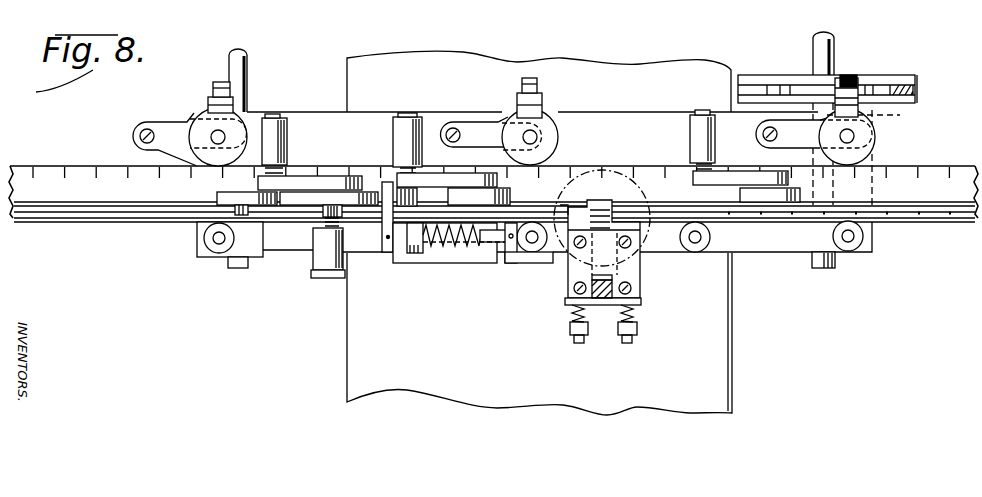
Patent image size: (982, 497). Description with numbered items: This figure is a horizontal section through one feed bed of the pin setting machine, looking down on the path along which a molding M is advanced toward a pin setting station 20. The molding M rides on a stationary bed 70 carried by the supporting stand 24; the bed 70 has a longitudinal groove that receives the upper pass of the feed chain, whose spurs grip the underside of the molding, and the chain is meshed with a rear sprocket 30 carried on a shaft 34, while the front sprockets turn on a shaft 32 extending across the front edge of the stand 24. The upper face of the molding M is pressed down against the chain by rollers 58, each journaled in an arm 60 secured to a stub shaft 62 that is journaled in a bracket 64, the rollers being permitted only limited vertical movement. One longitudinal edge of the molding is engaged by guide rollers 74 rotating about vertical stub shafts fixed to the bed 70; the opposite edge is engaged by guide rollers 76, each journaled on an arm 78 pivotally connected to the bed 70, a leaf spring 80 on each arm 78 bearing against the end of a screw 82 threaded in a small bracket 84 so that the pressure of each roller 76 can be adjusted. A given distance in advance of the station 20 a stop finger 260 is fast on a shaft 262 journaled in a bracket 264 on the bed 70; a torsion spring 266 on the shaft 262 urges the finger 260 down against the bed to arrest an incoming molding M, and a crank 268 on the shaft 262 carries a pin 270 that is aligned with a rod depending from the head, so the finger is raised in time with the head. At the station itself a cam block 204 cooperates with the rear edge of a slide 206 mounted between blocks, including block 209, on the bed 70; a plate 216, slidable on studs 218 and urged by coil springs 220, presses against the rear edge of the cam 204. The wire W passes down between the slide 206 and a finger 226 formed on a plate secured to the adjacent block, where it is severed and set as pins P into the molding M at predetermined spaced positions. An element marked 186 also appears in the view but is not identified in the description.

The pin setting station 20 is at (632, 199).
The stand 24 is at (734, 342).
The rear sprocket 30 is at (915, 84).
The shaft 32 is at (237, 268).
The shaft 34 is at (823, 270).
The roller 58 is at (367, 190).
The arm 60 is at (293, 185).
The stub shaft 62 is at (277, 118).
The bracket 64 is at (285, 135).
The stationary bed 70 is at (630, 122).
The guide roller 74 is at (208, 247).
The guide roller 76 is at (232, 122).
The arm 78 is at (163, 132).
The leaf spring 80 is at (200, 113).
The screw 82 is at (232, 93).
The bracket 84 is at (540, 93).
The member 186 is at (620, 198).
The cam block 204 is at (603, 300).
The slide 206 is at (562, 208).
The block 209 is at (633, 270).
The plate 216 is at (567, 307).
The stud 218 is at (578, 338).
The coil spring 220 is at (637, 317).
The finger 226 is at (607, 197).
The stop finger 260 is at (382, 214).
The shaft 262 is at (460, 248).
The bracket 264 is at (408, 262).
The torsion spring 266 is at (435, 248).
The crank 268 is at (510, 265).
The pin 270 is at (522, 264).
The molding M is at (82, 218).
The pin P is at (953, 211).
The wire W is at (587, 197).